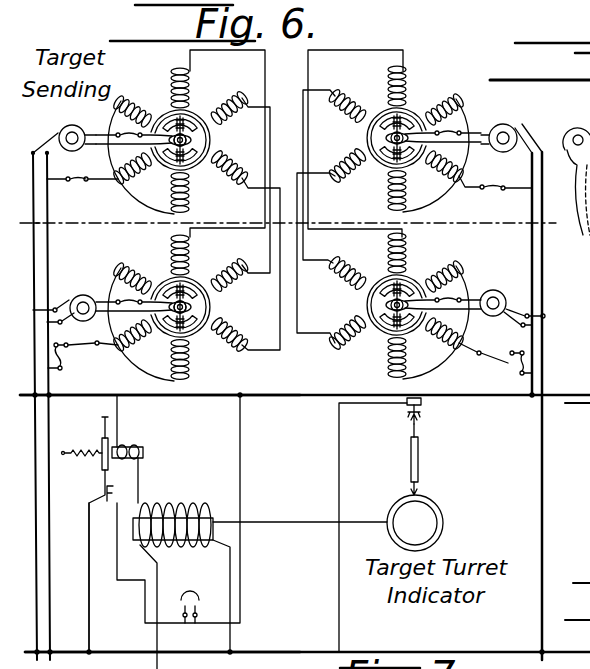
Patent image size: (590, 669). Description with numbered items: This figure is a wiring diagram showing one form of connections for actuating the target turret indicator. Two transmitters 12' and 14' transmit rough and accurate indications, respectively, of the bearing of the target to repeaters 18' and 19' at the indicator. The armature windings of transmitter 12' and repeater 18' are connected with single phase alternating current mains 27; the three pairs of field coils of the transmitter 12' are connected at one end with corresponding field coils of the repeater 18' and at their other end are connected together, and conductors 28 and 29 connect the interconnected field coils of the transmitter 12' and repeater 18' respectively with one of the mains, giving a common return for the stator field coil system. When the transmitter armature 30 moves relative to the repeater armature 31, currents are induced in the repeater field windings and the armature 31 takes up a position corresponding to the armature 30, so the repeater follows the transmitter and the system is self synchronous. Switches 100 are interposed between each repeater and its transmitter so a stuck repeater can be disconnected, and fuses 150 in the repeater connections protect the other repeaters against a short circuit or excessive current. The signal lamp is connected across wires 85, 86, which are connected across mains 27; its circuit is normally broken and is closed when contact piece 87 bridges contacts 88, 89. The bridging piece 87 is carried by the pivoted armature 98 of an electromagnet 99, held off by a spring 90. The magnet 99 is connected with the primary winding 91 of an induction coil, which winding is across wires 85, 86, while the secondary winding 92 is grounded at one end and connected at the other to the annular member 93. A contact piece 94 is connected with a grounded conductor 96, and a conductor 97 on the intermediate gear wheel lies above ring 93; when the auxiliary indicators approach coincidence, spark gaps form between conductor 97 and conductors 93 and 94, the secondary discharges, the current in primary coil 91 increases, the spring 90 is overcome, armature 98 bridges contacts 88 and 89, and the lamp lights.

The transmitter 12' is at (188, 200).
The transmitter 14' is at (414, 196).
The repeater 18' is at (173, 308).
The repeater 19' is at (404, 306).
The transmitter armature 30 is at (190, 140).
The repeater armature 31 is at (190, 308).
The fuse 150 is at (467, 125).
The conductor 28 is at (101, 182).
The single phase alternating current mains 27 is at (35, 243).
The conductor 29 is at (113, 355).
The switch 100 is at (62, 358).
The wire 85 is at (289, 395).
The wire 86 is at (277, 652).
The contact piece 87 is at (100, 492).
The contact 88 is at (100, 505).
The contact 89 is at (121, 496).
The spring 90 is at (81, 462).
The primary winding 91 is at (170, 510).
The secondary winding 92 is at (210, 512).
The annular member 93 is at (440, 504).
The contact piece 94 is at (425, 412).
The conductor 96 is at (339, 478).
The conductor 97 is at (420, 433).
The armature 98 is at (101, 443).
The electromagnet 99 is at (144, 453).